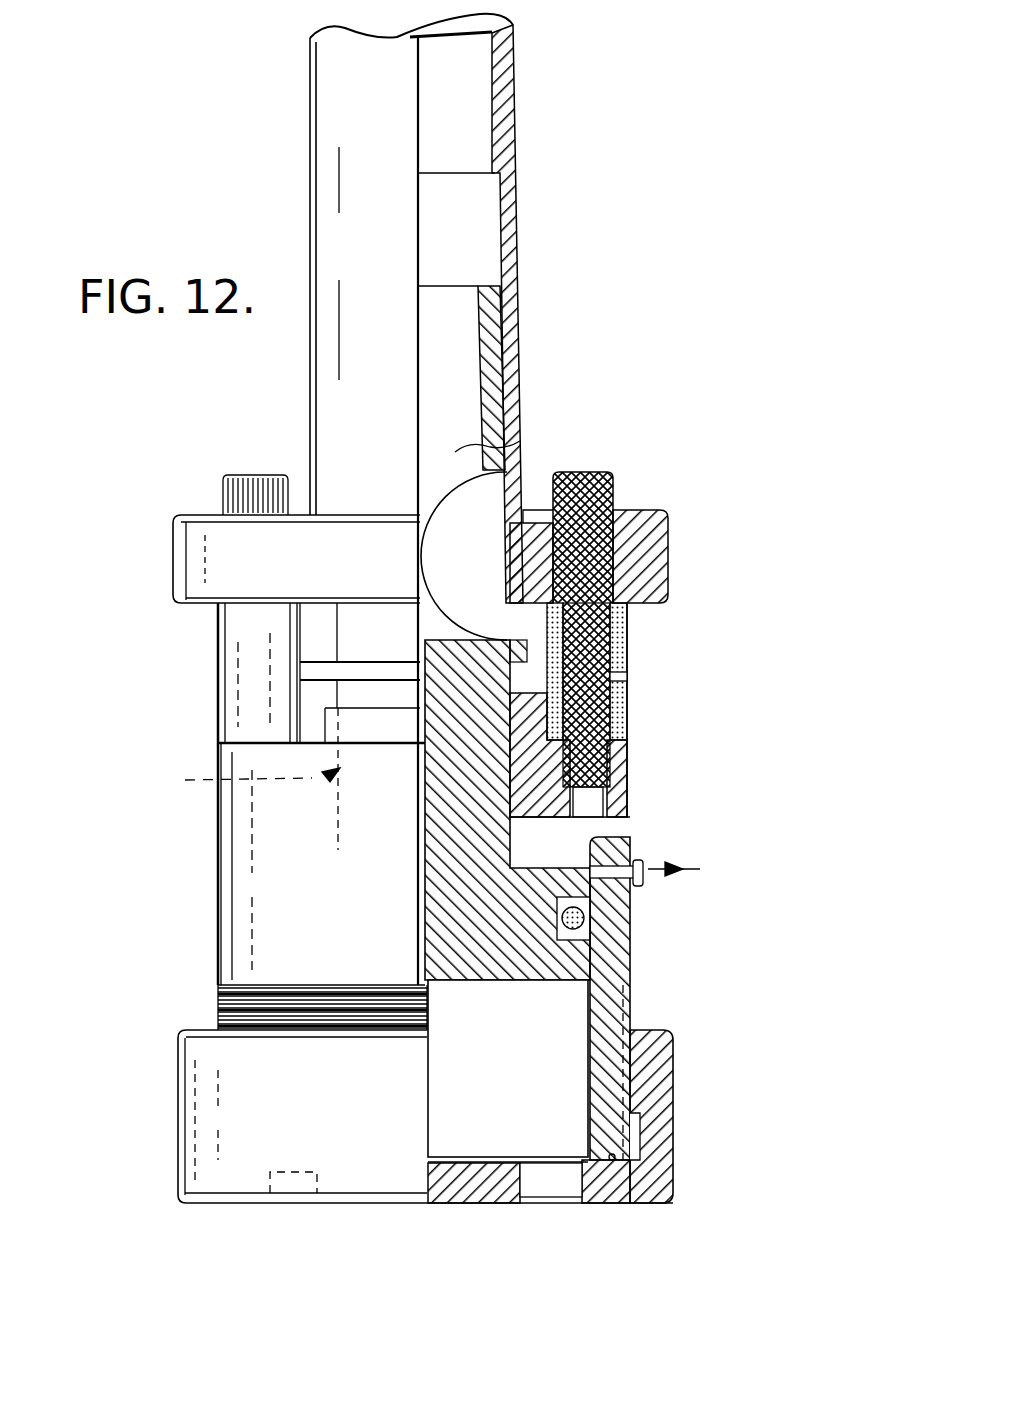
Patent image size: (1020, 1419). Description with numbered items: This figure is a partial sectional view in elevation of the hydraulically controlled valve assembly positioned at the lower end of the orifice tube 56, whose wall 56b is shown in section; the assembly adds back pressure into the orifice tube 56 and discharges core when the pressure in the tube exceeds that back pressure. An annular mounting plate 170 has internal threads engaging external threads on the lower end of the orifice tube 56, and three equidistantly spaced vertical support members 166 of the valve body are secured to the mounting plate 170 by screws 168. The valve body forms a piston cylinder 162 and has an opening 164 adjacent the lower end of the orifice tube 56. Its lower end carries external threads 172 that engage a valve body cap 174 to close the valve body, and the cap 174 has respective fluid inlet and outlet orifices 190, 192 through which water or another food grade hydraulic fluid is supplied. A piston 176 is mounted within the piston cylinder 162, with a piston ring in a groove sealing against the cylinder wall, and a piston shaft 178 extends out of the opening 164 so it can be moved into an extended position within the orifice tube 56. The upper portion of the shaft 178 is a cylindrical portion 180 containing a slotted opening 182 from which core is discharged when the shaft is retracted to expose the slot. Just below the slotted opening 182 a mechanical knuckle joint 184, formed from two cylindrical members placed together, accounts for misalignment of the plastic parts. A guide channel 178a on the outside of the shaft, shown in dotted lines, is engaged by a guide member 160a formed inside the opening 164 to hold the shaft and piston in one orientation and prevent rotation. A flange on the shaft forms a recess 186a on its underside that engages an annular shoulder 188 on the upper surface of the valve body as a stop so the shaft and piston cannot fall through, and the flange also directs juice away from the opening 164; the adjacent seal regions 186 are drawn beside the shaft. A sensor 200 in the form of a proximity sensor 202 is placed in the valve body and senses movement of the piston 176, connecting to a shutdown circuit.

The orifice tube 56 is at (518, 34).
The tube wall 56b is at (513, 92).
The piston shaft 178 is at (470, 330).
The cylindrical portion 180 is at (520, 441).
The slotted opening 182 is at (505, 556).
The screws 168 is at (225, 480).
The mounting plate 170 is at (668, 522).
The vertical support members 166 is at (240, 632).
The seal 186 is at (310, 668).
The recess 186a is at (627, 674).
The mechanical knuckle joint 184 is at (520, 703).
The guide member 160a is at (205, 718).
The annular shoulder 188 is at (220, 745).
The guide channel 178a is at (229, 783).
The opening 164 is at (512, 752).
The piston 176 is at (600, 953).
The proximity sensor 202 is at (645, 880).
The sensor 200 is at (648, 858).
The external threads 172 is at (218, 1010).
The piston cylinder 162 is at (508, 1071).
The valve body cap 174 is at (178, 1162).
The fluid inlet orifice 190 is at (540, 1187).
The fluid outlet orifice 192 is at (288, 1187).